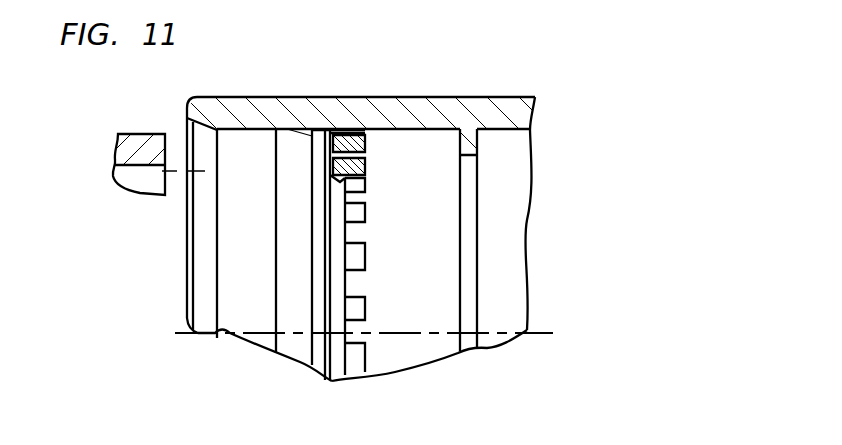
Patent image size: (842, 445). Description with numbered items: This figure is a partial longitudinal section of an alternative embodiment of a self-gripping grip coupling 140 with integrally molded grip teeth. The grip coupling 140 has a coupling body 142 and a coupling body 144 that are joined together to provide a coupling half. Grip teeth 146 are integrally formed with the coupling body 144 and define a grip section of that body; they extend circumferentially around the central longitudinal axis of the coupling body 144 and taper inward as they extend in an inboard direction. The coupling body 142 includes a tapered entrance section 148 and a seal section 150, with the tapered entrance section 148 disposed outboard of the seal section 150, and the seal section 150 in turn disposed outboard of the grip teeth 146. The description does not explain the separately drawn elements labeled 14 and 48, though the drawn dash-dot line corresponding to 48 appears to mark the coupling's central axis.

The housing 14 is at (122, 143).
The central axis 48 is at (546, 332).
The grip coupling 140 is at (345, 209).
The coupling body 142 is at (248, 112).
The coupling body 144 is at (367, 110).
The grip teeth 146 is at (360, 355).
The tapered entrance section 148 is at (187, 125).
The seal section 150 is at (287, 133).